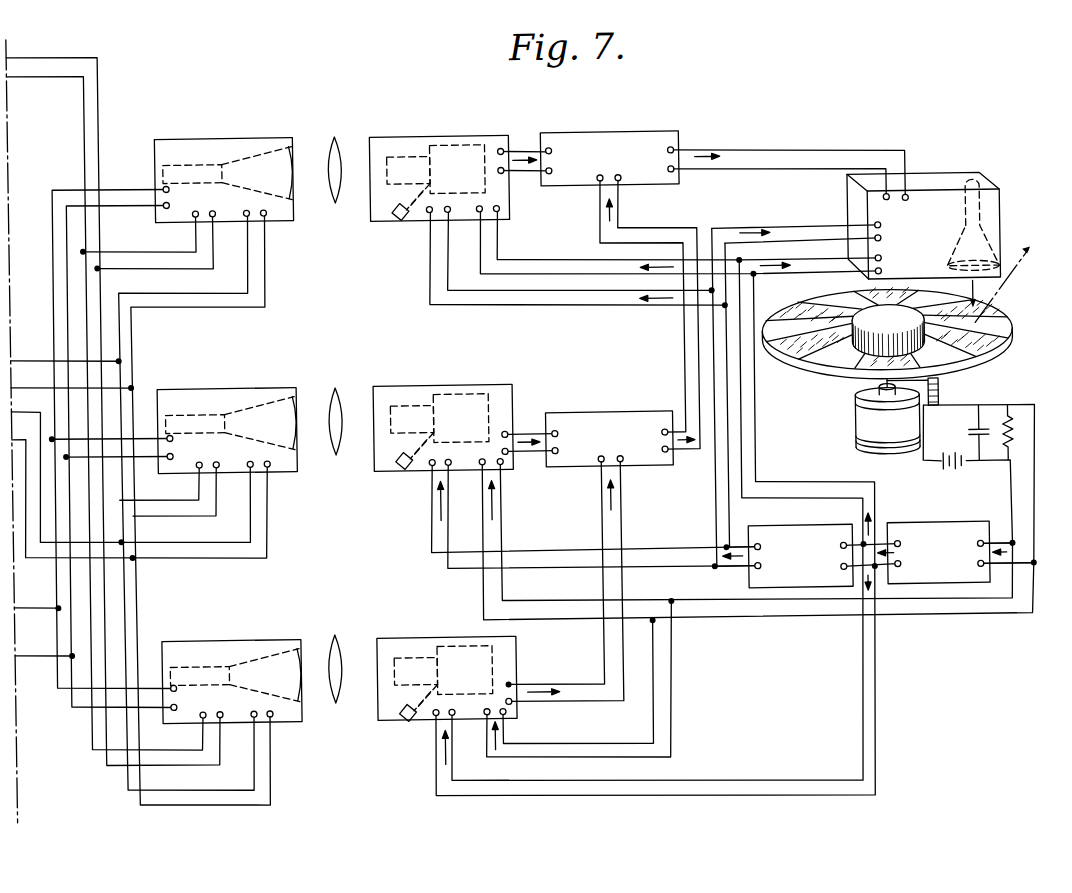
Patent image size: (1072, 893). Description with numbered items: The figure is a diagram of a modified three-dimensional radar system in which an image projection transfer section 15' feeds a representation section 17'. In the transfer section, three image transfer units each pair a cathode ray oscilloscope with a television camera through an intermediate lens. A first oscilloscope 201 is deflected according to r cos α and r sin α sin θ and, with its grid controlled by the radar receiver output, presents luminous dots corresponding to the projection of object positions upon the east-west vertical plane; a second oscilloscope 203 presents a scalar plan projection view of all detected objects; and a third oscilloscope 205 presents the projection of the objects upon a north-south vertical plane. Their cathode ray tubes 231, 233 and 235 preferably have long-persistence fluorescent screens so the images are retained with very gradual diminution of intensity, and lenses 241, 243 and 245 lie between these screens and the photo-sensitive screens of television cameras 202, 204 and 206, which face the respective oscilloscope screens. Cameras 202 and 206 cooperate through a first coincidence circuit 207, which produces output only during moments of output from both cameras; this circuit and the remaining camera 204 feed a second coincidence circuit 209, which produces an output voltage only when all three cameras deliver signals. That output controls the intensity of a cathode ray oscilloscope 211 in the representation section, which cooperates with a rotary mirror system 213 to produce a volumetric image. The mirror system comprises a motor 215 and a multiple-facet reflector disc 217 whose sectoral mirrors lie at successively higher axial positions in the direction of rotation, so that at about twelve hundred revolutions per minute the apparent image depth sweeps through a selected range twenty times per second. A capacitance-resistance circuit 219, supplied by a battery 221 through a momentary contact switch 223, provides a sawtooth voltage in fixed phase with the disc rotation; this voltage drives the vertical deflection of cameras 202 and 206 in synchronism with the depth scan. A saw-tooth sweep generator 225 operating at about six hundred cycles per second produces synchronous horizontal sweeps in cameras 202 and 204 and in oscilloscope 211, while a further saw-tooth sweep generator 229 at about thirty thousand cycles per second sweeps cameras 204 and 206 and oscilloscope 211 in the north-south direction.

The image projection transfer section 15' is at (352, 64).
The representation section 17' is at (824, 56).
The first oscilloscope 201 is at (296, 720).
The television camera 202 is at (430, 636).
The second oscilloscope 203 is at (296, 219).
The television camera 204 is at (514, 134).
The third oscilloscope 205 is at (297, 470).
The television camera 206 is at (472, 384).
The first coincidence circuit 207 is at (591, 413).
The second coincidence circuit 209 is at (684, 134).
The cathode ray oscilloscope 211 is at (954, 178).
The rotary mirror system 213 is at (852, 389).
The motor 215 is at (866, 437).
The multiple-facet reflector disc 217 is at (1020, 330).
The capacitance-resistance circuit 219 is at (994, 466).
The battery 221 is at (942, 483).
The momentary contact switch 223 is at (945, 400).
The saw-tooth sweep generator 225 is at (976, 529).
The saw-tooth sweep generator 229 is at (832, 530).
The cathode ray tube 231 is at (267, 646).
The cathode ray tube 233 is at (268, 146).
The cathode ray tube 235 is at (263, 396).
The lens 241 is at (335, 632).
The lens 243 is at (340, 133).
The lens 245 is at (336, 385).